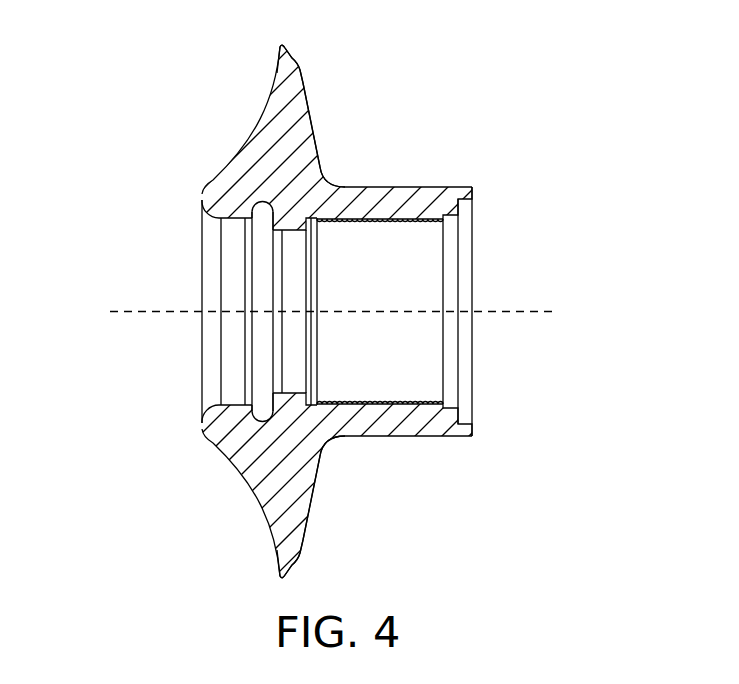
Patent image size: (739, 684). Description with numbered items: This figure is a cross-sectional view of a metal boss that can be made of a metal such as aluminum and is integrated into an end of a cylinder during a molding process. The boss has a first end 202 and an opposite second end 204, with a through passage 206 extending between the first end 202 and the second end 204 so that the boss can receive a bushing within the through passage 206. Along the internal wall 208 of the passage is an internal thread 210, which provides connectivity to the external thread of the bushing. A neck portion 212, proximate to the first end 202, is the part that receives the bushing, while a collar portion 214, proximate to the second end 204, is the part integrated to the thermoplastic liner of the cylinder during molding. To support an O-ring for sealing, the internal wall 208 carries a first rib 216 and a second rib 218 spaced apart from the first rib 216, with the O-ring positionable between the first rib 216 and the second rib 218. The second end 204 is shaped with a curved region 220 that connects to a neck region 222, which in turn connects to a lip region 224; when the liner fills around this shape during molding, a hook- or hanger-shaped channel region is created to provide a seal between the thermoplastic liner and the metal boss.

The first end 202 is at (476, 186).
The second end 204 is at (189, 190).
The through passage 206 is at (333, 314).
The internal wall 208 is at (222, 224).
The internal thread 210 is at (432, 224).
The neck portion 212 is at (444, 179).
The collar portion 214 is at (305, 75).
The first rib 216 is at (323, 186).
The second rib 218 is at (300, 157).
The curved region 220 is at (204, 411).
The neck region 222 is at (237, 404).
The lip region 224 is at (262, 415).